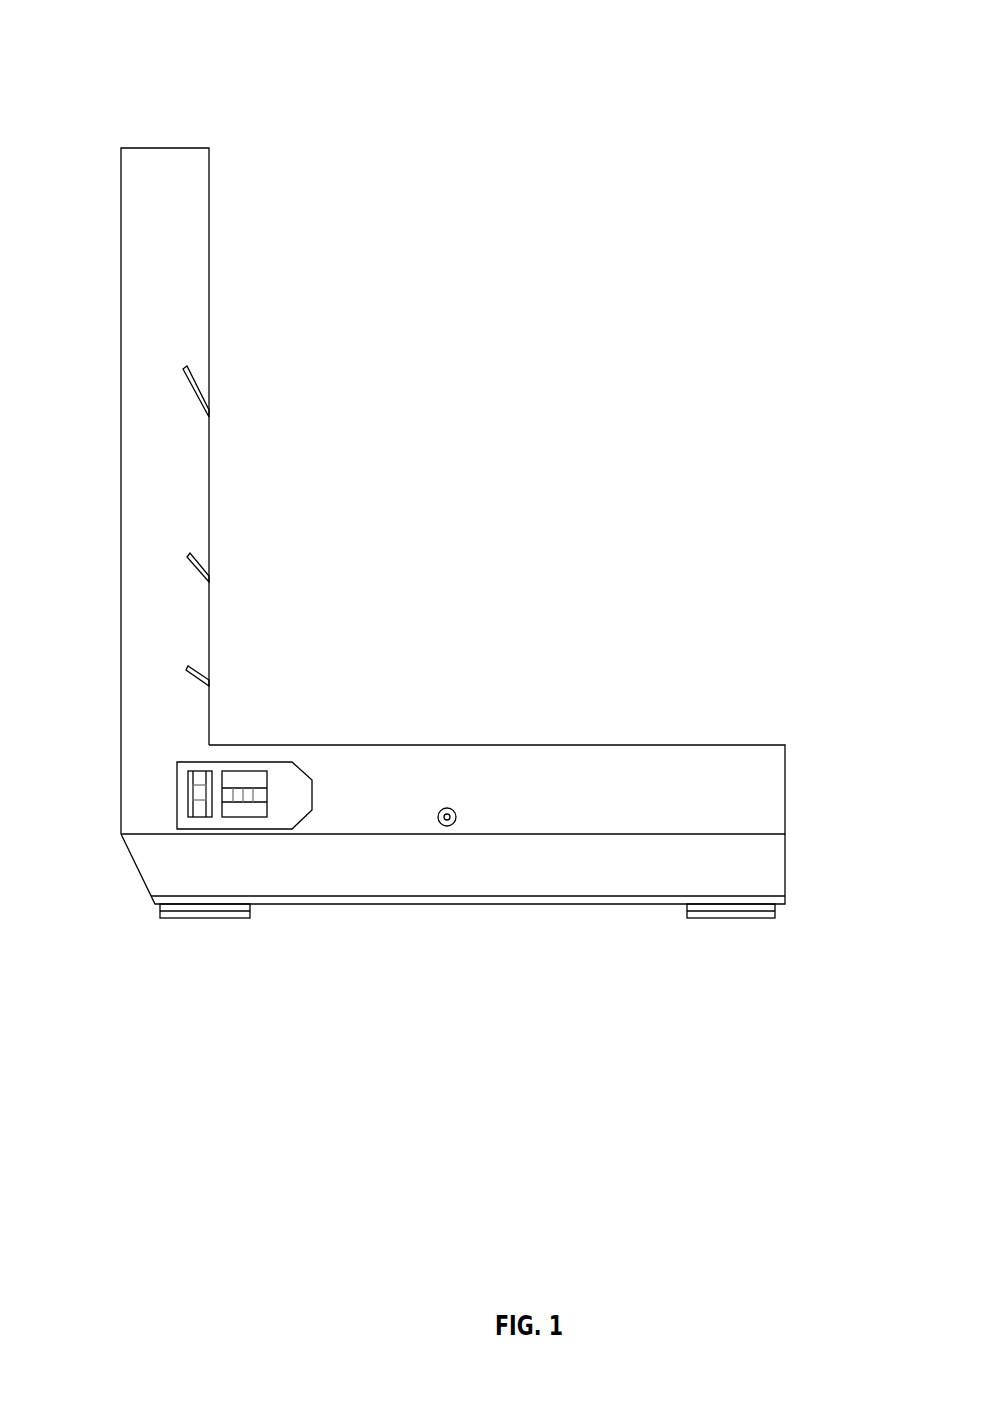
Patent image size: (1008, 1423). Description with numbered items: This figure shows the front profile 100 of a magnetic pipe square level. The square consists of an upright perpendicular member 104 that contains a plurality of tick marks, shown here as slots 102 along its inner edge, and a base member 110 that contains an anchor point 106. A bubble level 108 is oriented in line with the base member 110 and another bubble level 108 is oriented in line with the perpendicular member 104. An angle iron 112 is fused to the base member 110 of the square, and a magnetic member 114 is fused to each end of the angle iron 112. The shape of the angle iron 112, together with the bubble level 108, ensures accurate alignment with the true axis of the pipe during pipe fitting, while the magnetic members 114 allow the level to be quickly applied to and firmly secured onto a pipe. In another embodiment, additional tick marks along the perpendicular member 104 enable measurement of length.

The front profile 100 is at (499, 70).
The slots 102 is at (198, 388).
The perpendicular member 104 is at (148, 255).
The anchor point 106 is at (453, 823).
The bubble level 108 is at (193, 797).
The base member 110 is at (758, 772).
The angle iron 112 is at (772, 863).
The magnetic member 114 is at (163, 910).